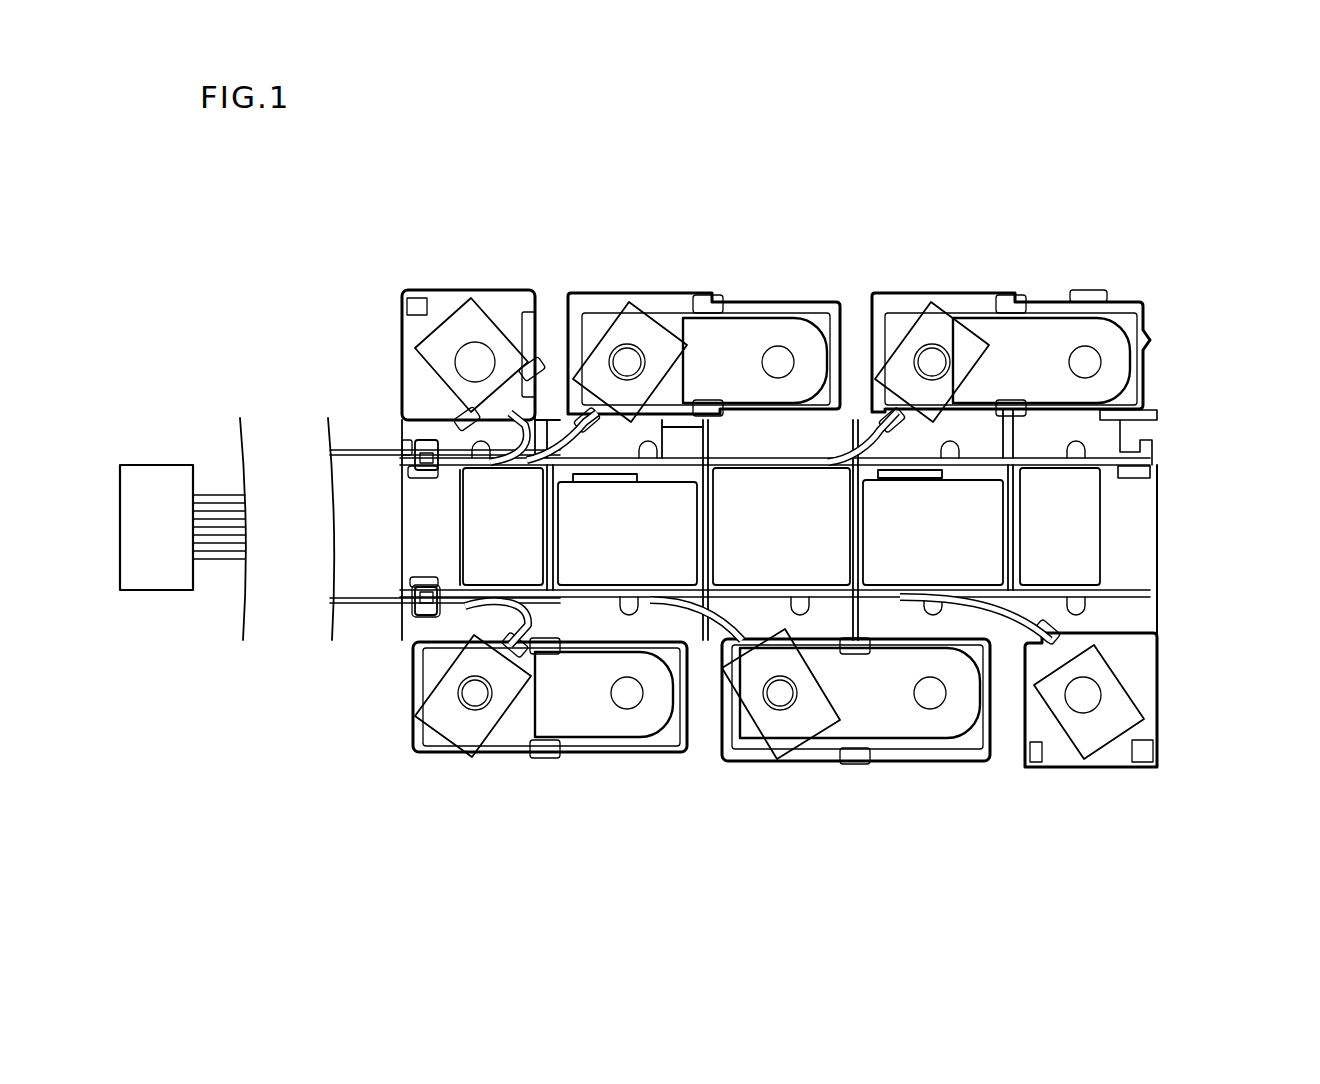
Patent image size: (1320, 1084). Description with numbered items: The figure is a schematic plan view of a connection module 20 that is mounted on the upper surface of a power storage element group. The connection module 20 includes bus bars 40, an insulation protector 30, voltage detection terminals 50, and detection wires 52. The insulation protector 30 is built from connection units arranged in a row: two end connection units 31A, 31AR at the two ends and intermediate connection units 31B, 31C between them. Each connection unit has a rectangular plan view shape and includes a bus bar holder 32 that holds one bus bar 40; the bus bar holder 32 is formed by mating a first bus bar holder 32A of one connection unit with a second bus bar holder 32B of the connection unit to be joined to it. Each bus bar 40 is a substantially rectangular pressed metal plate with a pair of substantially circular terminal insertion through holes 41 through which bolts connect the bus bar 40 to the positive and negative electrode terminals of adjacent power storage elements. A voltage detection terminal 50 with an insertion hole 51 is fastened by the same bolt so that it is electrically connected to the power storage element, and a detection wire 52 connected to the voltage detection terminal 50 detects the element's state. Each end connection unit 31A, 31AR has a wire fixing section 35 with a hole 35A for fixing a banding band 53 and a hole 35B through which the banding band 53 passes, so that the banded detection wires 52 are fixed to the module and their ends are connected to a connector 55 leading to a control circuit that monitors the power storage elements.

The connection module 20 is at (672, 915).
The insulation protector 30 is at (526, 255).
The end connection unit 31A is at (512, 755).
The intermediate connection unit 31B is at (613, 753).
The intermediate connection unit 31C is at (806, 762).
The end connection unit 31AR is at (1120, 768).
The bus bar holder 32 is at (704, 288).
The first bus bar holder 32A is at (648, 292).
The second bus bar holder 32B is at (755, 296).
The wire fixing section 35 is at (392, 424).
The hole for fixing the banding band 35A is at (1135, 447).
The hole through which the banding band passes 35B is at (1135, 474).
The bus bar 40 is at (1027, 350).
The terminal insertion through hole 41 is at (923, 352).
The voltage detection terminal 50 is at (935, 312).
The insertion hole 51 is at (942, 352).
The detection wire 52 is at (988, 603).
The banding band 53 is at (421, 622).
The connector 55 is at (152, 468).